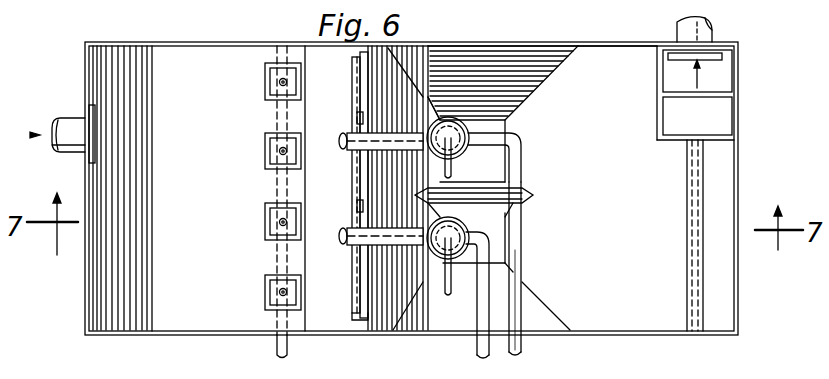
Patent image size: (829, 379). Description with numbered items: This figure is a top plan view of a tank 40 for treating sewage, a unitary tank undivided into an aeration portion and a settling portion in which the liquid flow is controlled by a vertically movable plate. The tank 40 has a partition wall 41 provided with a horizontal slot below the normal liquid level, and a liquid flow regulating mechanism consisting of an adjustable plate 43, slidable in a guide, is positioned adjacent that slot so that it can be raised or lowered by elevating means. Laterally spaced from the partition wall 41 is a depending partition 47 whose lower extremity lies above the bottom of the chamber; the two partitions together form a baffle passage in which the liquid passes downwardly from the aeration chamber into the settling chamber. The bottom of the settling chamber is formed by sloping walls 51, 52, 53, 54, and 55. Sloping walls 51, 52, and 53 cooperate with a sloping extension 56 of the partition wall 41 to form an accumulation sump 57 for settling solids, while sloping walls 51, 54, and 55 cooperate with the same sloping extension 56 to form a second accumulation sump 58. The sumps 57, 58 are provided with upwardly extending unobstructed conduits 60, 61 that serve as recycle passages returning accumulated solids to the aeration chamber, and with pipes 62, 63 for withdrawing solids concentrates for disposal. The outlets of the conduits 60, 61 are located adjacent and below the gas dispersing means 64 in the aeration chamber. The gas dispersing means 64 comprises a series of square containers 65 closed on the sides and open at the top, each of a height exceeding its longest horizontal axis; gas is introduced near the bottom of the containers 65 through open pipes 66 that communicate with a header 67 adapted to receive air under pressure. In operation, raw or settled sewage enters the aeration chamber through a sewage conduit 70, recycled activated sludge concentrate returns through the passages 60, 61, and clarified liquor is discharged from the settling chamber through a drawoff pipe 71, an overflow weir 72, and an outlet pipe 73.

The tank 40 is at (85, 300).
The partition wall 41 is at (365, 322).
The adjustable plate 43 is at (352, 208).
The depending partition 47 is at (437, 318).
The sloping wall 51 is at (606, 72).
The sloping wall 52 is at (543, 320).
The sloping wall 53 is at (505, 205).
The sloping wall 54 is at (498, 183).
The sloping wall 55 is at (520, 93).
The sloping extension 56 is at (443, 262).
The accumulation sump 57 is at (495, 240).
The second accumulation sump 58 is at (495, 128).
The conduit 60 is at (378, 238).
The conduit 61 is at (372, 142).
The pipe 62 is at (477, 342).
The pipe 63 is at (527, 344).
The gas dispersing means 64 is at (255, 88).
The square container 65 is at (270, 168).
The open pipe 66 is at (266, 226).
The header 67 is at (275, 348).
The sewage conduit 70 is at (65, 128).
The drawoff pipe 71 is at (705, 187).
The overflow weir 72 is at (710, 100).
The outlet pipe 73 is at (712, 35).